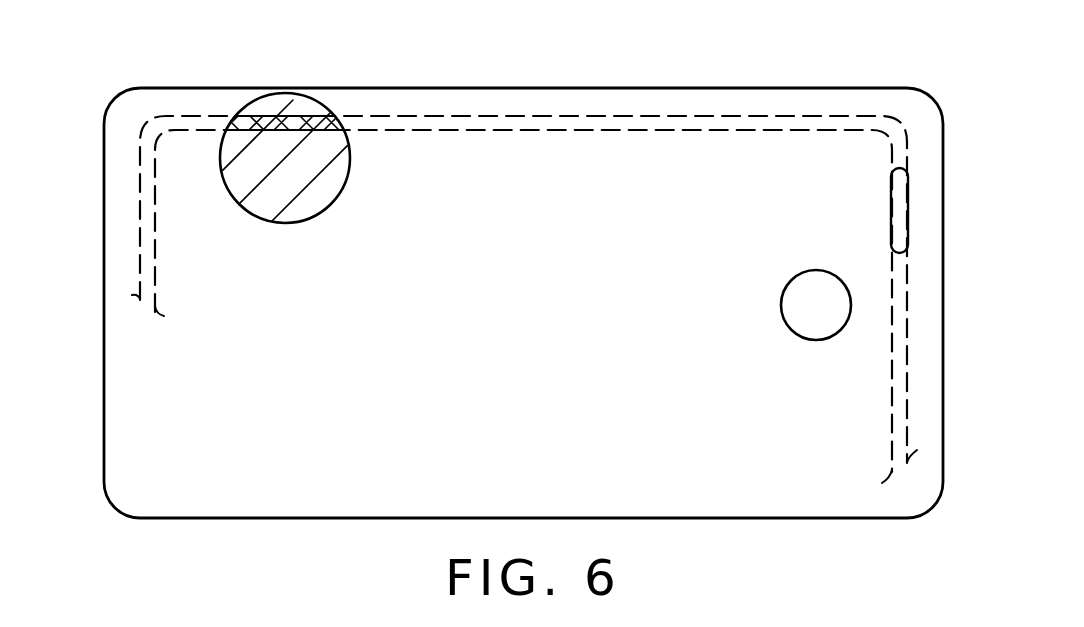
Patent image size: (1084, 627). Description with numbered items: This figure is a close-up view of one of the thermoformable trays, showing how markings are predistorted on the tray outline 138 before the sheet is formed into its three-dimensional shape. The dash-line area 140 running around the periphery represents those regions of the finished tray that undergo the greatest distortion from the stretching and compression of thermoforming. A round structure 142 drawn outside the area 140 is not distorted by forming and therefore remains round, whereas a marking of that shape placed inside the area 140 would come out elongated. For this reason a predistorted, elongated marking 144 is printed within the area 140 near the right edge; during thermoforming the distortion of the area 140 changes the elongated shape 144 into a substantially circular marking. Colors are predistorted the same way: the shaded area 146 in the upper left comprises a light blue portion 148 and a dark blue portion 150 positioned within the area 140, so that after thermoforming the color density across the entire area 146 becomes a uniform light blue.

The housing 138 is at (755, 507).
The dash-line area 140 is at (693, 117).
The round structure 142 is at (792, 306).
The elongated marking 144 is at (889, 212).
The shaded area 146 is at (282, 256).
The light blue portion 148 is at (332, 188).
The dark blue portion 150 is at (338, 104).